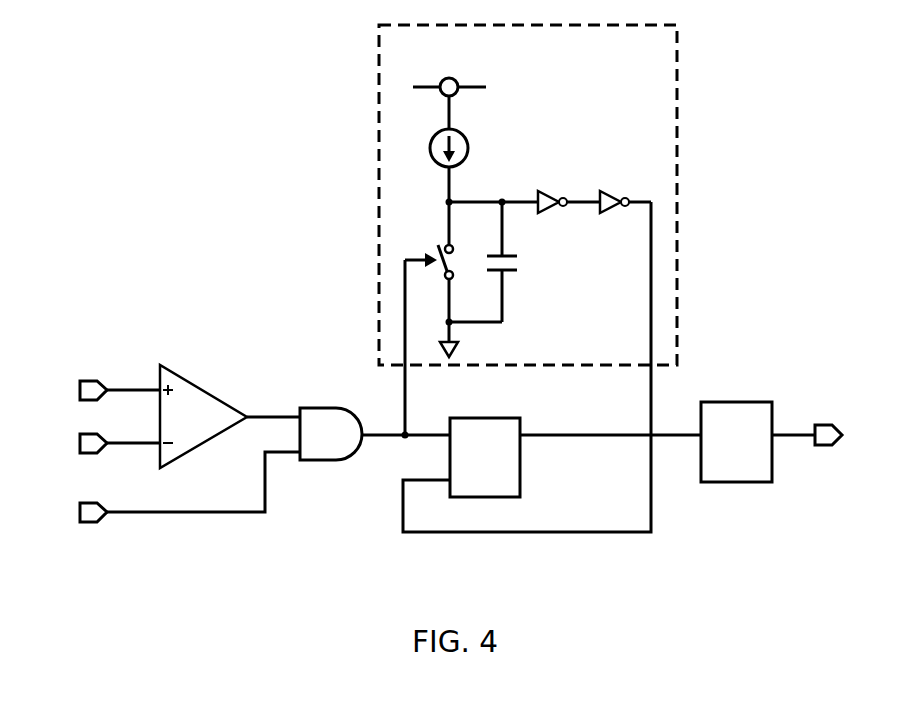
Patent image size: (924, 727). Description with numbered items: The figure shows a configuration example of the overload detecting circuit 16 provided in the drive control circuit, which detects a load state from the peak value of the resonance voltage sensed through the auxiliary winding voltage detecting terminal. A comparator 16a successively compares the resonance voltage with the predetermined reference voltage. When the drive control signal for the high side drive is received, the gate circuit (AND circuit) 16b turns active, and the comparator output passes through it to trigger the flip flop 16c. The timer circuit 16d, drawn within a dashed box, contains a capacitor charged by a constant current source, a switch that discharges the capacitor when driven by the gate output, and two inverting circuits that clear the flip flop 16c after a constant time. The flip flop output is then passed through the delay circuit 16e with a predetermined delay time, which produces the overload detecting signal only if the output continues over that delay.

The overload detecting circuit 16 is at (745, 137).
The comparator 16a is at (172, 369).
The gate circuit (AND circuit) 16b is at (318, 407).
The flip flop 16c is at (512, 468).
The timer circuit 16d is at (564, 262).
The delay circuit 16e is at (760, 402).